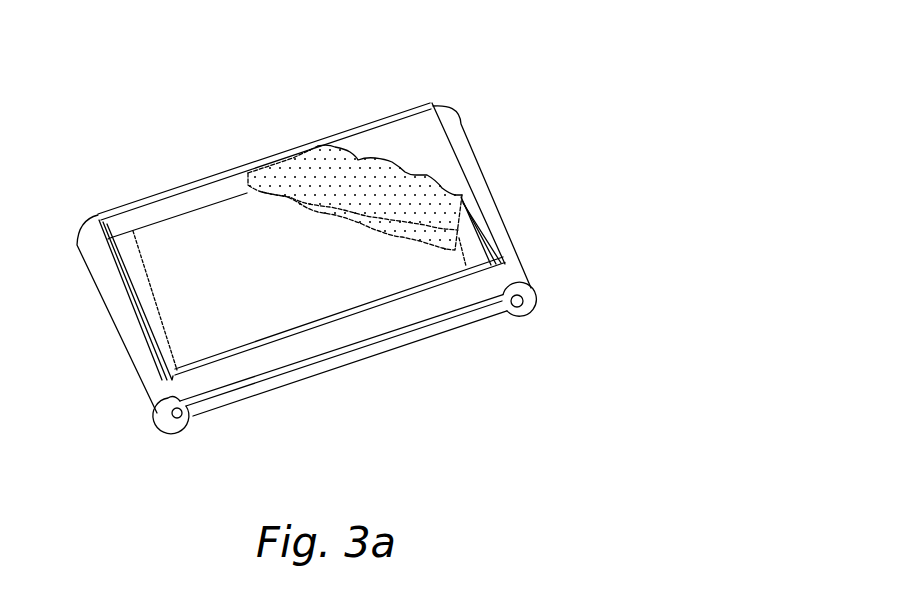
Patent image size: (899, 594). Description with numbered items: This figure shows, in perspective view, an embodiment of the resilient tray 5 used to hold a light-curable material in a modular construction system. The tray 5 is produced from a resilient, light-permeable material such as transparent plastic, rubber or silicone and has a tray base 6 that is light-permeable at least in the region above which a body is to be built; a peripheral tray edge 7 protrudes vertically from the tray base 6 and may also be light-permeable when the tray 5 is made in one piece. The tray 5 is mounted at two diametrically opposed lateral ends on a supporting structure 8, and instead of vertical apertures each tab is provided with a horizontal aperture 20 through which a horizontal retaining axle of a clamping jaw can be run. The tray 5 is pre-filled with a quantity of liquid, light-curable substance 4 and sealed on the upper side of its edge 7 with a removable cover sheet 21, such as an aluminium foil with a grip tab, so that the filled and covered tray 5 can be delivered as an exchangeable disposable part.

The tray 5 is at (115, 73).
The light-curable substance 4 is at (323, 177).
The tray base 6 is at (270, 275).
The tray edge 7 is at (210, 190).
The supporting structure 8 is at (128, 325).
The horizontal aperture 20 is at (180, 415).
The cover sheet 21 is at (407, 148).